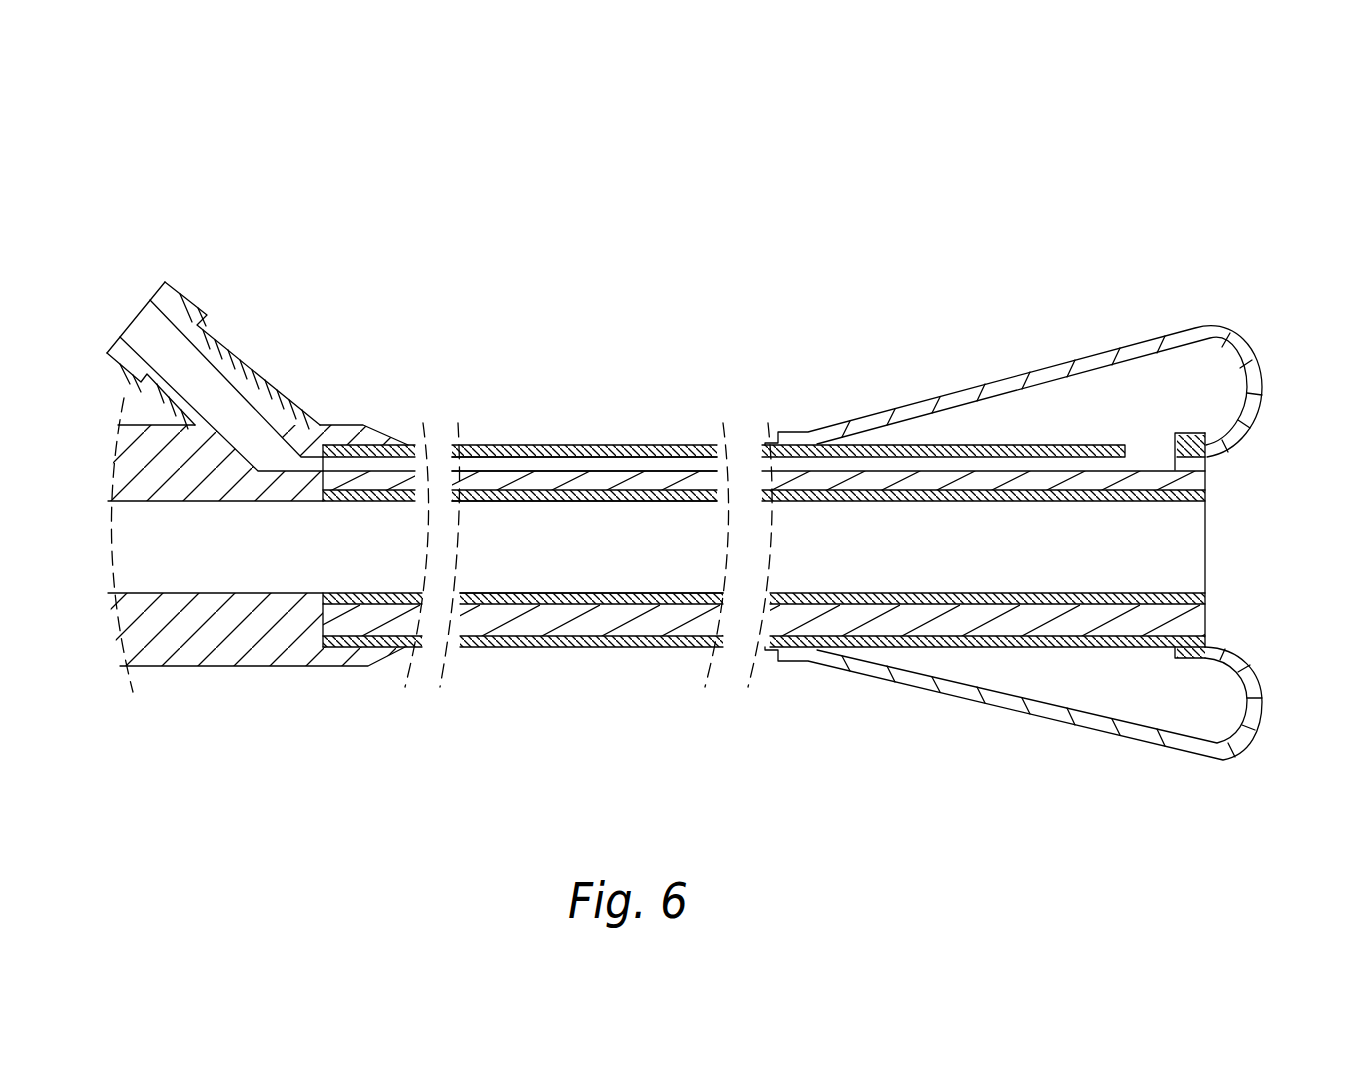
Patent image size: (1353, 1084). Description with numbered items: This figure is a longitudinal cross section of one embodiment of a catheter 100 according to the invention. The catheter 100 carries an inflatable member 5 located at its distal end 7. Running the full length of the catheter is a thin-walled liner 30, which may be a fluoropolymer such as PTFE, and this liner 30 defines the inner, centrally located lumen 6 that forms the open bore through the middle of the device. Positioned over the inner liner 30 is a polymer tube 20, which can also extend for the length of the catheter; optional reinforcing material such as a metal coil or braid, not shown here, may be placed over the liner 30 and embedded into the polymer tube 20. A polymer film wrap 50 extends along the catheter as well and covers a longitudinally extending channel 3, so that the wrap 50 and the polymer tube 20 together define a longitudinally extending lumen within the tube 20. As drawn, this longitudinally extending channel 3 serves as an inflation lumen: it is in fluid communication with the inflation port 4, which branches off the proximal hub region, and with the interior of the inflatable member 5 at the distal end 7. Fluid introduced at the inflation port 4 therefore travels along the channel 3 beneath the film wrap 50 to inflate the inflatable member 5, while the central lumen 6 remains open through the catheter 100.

The catheter 100 is at (609, 257).
The inflation port 4 is at (130, 318).
The polymer film wrap 50 is at (465, 443).
The longitudinally extending channel 3 is at (478, 462).
The thin-walled liner 30 is at (586, 490).
The polymer tube 20 is at (933, 478).
The inflatable member 5 is at (984, 382).
The lumen 6 is at (498, 592).
The distal end 7 is at (1206, 540).